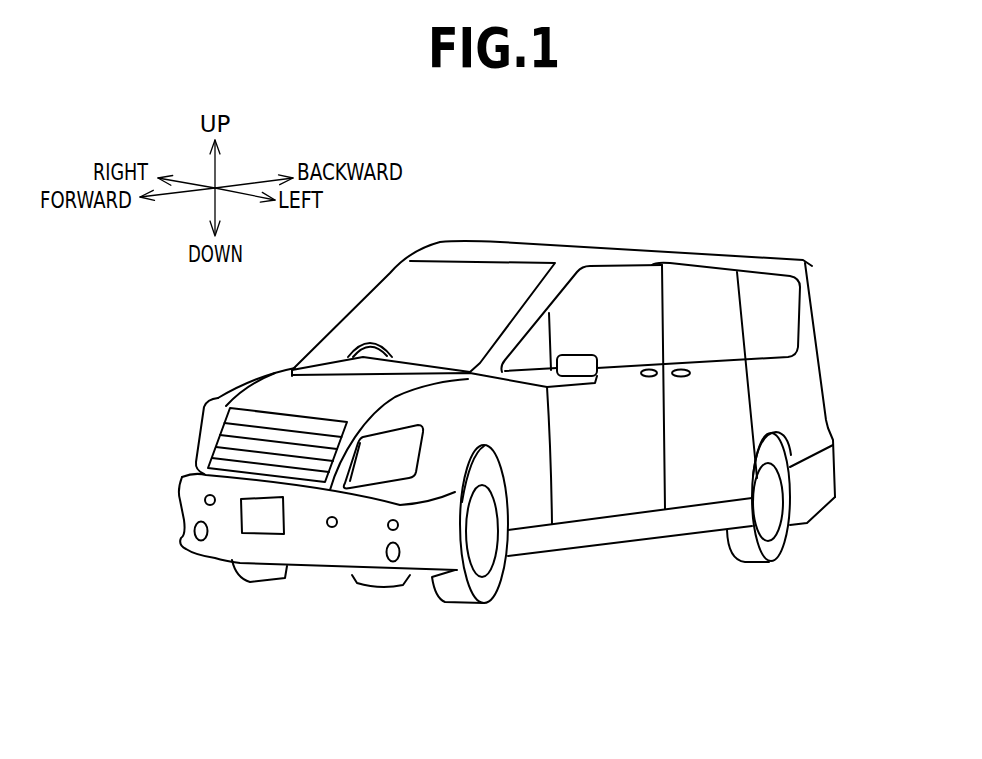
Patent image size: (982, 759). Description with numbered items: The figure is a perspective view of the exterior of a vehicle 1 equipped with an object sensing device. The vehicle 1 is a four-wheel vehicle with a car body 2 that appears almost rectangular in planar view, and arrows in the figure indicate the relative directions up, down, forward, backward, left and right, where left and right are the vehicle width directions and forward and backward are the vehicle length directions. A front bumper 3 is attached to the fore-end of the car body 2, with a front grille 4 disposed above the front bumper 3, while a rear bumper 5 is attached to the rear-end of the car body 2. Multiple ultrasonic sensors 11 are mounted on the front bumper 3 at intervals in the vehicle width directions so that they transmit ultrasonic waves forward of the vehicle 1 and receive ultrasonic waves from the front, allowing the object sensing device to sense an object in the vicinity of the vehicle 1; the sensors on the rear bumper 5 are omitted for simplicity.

The vehicle 1 is at (808, 253).
The car body 2 is at (807, 395).
The front bumper 3 is at (188, 492).
The front grille 4 is at (227, 440).
The rear bumper 5 is at (827, 467).
The ultrasonic sensor 11 is at (211, 505).